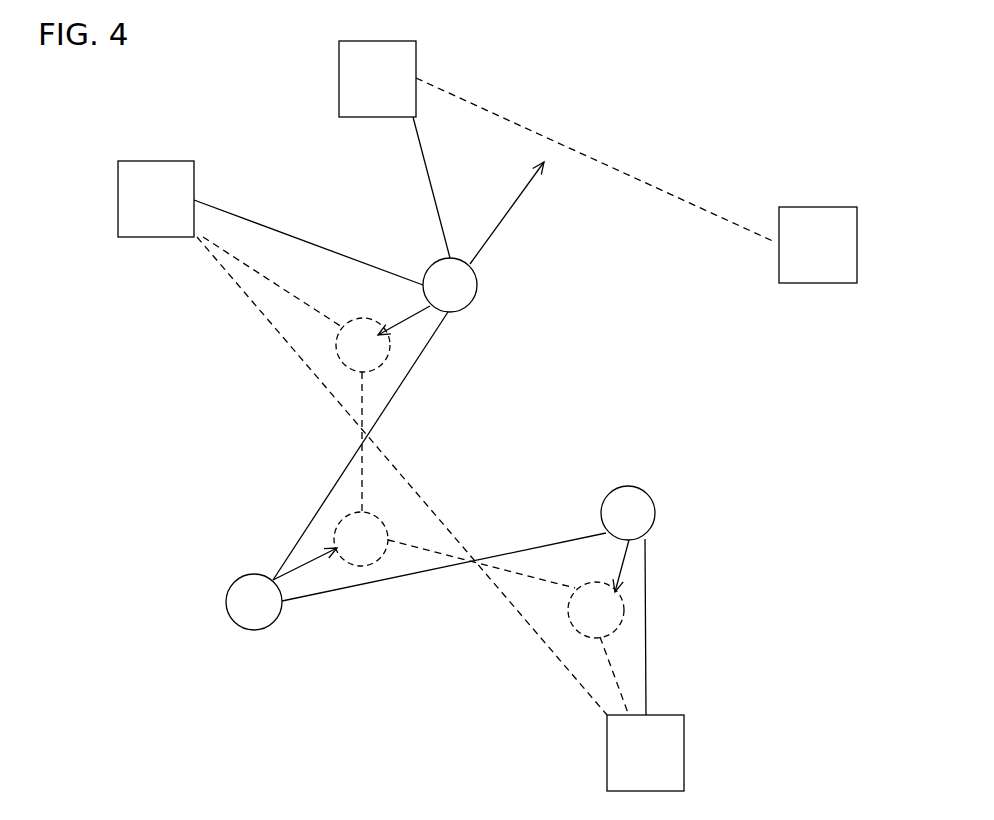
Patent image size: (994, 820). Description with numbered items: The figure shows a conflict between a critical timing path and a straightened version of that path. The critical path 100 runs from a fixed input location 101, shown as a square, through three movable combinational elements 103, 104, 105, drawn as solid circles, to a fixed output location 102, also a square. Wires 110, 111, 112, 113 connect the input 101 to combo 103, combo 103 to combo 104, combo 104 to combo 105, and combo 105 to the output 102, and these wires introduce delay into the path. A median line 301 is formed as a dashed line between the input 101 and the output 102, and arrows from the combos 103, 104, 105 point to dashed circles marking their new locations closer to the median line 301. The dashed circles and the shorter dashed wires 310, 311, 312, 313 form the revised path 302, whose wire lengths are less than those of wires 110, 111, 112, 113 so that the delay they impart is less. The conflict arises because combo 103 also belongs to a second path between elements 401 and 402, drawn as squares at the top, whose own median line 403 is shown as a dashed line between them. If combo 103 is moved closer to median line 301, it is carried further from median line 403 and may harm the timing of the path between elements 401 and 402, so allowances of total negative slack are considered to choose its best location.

The path 100 is at (484, 343).
The input location 101 is at (156, 199).
The output location 102 is at (645, 753).
The combinational element 103 is at (430, 268).
The combinational element 104 is at (248, 600).
The combinational element 105 is at (655, 513).
The wire 110 is at (254, 237).
The wire 111 is at (397, 400).
The wire 112 is at (397, 583).
The wire 113 is at (646, 650).
The median line 301 is at (248, 295).
The revised path 302 is at (248, 400).
The wire 310 is at (305, 300).
The wire 311 is at (361, 478).
The wire 312 is at (519, 573).
The wire 313 is at (612, 677).
The element 401 is at (377, 79).
The element 402 is at (818, 245).
The median line 403 is at (493, 117).